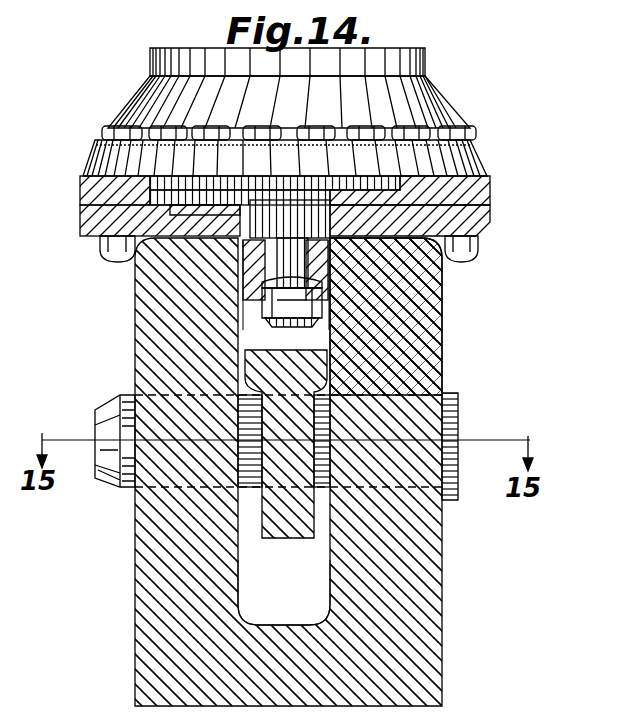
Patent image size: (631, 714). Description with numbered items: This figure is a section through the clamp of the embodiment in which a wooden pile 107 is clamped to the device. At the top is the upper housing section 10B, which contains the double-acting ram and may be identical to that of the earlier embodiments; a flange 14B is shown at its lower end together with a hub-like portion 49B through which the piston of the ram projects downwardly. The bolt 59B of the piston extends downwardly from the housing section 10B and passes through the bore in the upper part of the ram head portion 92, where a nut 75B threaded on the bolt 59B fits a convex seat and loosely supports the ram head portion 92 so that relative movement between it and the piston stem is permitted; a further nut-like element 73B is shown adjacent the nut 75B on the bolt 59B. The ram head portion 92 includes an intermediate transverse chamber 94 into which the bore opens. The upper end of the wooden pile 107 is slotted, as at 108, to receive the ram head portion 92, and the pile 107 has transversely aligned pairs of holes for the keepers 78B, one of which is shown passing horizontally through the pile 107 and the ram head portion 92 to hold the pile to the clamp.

The upper housing section 10B is at (395, 68).
The flange 14B is at (487, 160).
The hub 49B is at (262, 240).
The bolt 59B is at (265, 262).
The nut 73B is at (290, 292).
The nut 75B is at (300, 314).
The intermediate transverse chamber 94 is at (310, 342).
The keepers 78B is at (120, 472).
The ram head portion 92 is at (284, 546).
The wooden pile 107 is at (442, 652).
The slot 108 is at (260, 610).